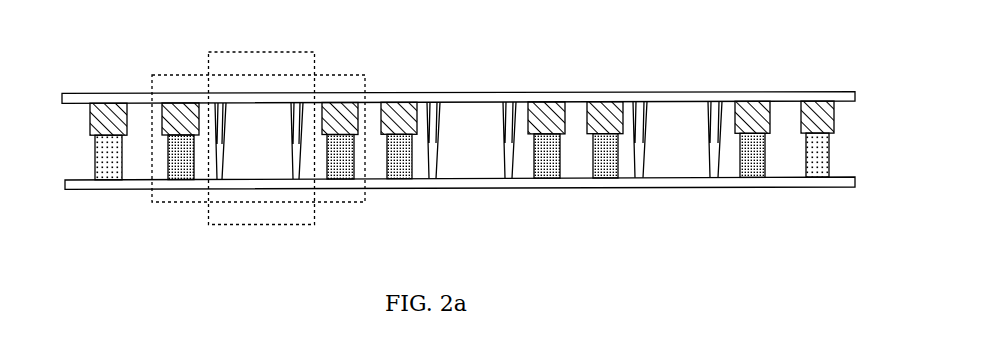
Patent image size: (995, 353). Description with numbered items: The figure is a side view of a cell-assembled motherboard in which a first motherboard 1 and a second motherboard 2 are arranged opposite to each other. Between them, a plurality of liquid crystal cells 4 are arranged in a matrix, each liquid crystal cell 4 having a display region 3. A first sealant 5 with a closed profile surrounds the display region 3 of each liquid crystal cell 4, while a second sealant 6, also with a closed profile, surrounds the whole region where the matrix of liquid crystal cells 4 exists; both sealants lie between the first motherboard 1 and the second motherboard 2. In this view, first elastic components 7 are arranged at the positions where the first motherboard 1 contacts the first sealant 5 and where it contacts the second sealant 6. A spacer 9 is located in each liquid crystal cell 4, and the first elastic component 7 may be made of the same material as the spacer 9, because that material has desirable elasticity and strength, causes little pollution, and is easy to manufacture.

The first motherboard 1 is at (437, 92).
The second motherboard 2 is at (467, 188).
The display region 3 is at (262, 52).
The liquid crystal cell 4 is at (345, 74).
The first sealant 5 is at (559, 160).
The second sealant 6 is at (828, 153).
The first elastic component 7 is at (181, 106).
The spacer 9 is at (432, 160).